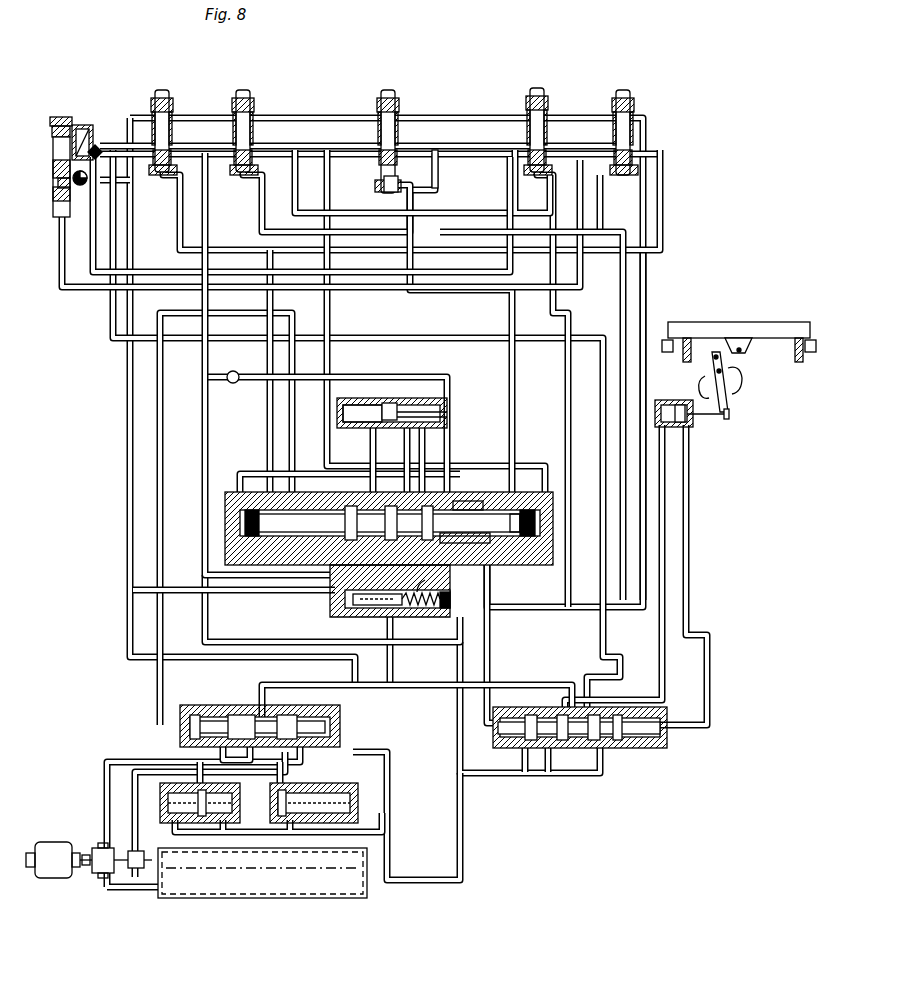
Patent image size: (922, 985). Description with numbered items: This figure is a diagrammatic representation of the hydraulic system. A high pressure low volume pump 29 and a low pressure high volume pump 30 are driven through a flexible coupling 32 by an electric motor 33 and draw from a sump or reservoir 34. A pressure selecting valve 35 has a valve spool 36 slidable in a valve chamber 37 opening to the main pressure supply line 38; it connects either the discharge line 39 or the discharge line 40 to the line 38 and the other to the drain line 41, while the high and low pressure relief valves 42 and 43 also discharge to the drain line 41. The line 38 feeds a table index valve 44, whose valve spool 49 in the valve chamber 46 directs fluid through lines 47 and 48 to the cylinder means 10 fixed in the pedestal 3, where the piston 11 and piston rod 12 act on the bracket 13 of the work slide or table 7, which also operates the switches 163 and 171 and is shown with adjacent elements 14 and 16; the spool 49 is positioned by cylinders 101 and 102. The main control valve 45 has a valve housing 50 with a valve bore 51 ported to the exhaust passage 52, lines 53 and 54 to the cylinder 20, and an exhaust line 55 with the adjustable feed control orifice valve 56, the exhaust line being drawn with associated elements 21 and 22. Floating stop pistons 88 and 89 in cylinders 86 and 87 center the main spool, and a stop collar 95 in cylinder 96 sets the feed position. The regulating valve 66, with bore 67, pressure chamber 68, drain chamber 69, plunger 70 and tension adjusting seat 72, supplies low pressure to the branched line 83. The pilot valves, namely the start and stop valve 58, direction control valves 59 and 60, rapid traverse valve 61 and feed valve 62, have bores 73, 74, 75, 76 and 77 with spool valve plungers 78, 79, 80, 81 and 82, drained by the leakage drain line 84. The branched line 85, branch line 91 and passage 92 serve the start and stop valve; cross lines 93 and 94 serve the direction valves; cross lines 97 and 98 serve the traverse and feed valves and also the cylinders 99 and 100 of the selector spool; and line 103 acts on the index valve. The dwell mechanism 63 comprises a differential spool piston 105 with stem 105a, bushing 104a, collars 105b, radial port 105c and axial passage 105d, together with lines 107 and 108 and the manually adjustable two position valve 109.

The pedestal 3 is at (693, 344).
The work slide or table 7 is at (774, 324).
The cylinder means 10 is at (692, 427).
The piston 11 is at (682, 405).
The piston rod 12 is at (706, 417).
The bracket 13 is at (744, 353).
The bolt 14 is at (810, 353).
The bolt 16 is at (662, 348).
The cylinder 20 is at (368, 402).
The valve member 21 is at (392, 402).
The stem 22 is at (424, 405).
The high pressure low volume pump 29 is at (140, 851).
The low pressure high volume pump 30 is at (98, 848).
The flexible coupling 32 is at (84, 868).
The electric motor 33 is at (56, 842).
The sump or reservoir 34 is at (242, 896).
The pressure selecting valve 35 is at (196, 704).
The valve spool 36 is at (226, 714).
The valve chamber 37 is at (278, 718).
The main pressure supply line 38 is at (296, 684).
The discharge line 39 is at (150, 756).
The discharge line 40 is at (102, 776).
The drain line 41 is at (583, 186).
The high pressure relief valve 42 is at (354, 786).
The low pressure relief valve 43 is at (158, 820).
The table index valve 44 is at (650, 754).
The main control valve 45 is at (470, 573).
The valve chamber 46 is at (546, 710).
The line 47 is at (666, 555).
The line 48 is at (689, 570).
The valve spool 49 is at (566, 752).
The valve housing 50 is at (525, 490).
The valve bore 51 is at (389, 513).
The exhaust passage 52 is at (285, 596).
The line 53 is at (369, 443).
The line 54 is at (405, 447).
The exhaust line 55 is at (450, 410).
The adjustable feed control orifice valve 56 is at (233, 385).
The start and stop valve 58 is at (402, 94).
The direction control valve 59 is at (636, 98).
The direction control valve 60 is at (175, 98).
The rapid traverse valve 61 is at (546, 92).
The feed valve 62 is at (254, 98).
The dwell mechanism 63 is at (70, 118).
The regulating valve 66 is at (329, 615).
The bore 67 is at (391, 627).
The pressure chamber 68 is at (332, 600).
The drain chamber 69 is at (443, 582).
The plunger 70 is at (360, 608).
The tension adjusting seat 72 is at (447, 600).
The valve bore 73 is at (399, 134).
The bore 74 is at (636, 130).
The bore 75 is at (173, 134).
The bore 76 is at (543, 134).
The bore 77 is at (256, 134).
The spool valve plunger 78 is at (388, 88).
The spool valve plunger 79 is at (624, 88).
The spool valve plunger 80 is at (163, 90).
The spool valve plunger 81 is at (532, 86).
The spool valve plunger 82 is at (243, 88).
The branched line 83 is at (482, 139).
The leakage drain line 84 is at (647, 275).
The branched line 85 is at (328, 375).
The cylinder 86 is at (247, 537).
The cylinder 87 is at (531, 539).
The floating stop piston 88 is at (270, 539).
The floating stop piston 89 is at (512, 538).
The branch line 91 is at (438, 175).
The passage 92 is at (382, 186).
The cross line 93 is at (610, 197).
The cross line 94 is at (666, 185).
The stop collar 95 is at (476, 543).
The cylinder 96 is at (449, 543).
The cross line 97 is at (514, 186).
The cross line 98 is at (294, 198).
The cylinder 99 is at (178, 714).
The cylinder 100 is at (344, 740).
The cylinder 101 is at (656, 740).
The cylinder 102 is at (500, 746).
The line 103 is at (604, 638).
The bushing 104a is at (88, 180).
The differential spool piston 105 is at (68, 112).
The stem 105a is at (56, 205).
The collars 105b is at (50, 128).
The radial port 105c is at (98, 124).
The axial passage 105d is at (70, 192).
The line 107 is at (100, 116).
The line 108 is at (98, 144).
The manually adjustable two position valve 109 is at (100, 149).
The switch 163 is at (733, 396).
The switch 171 is at (713, 370).